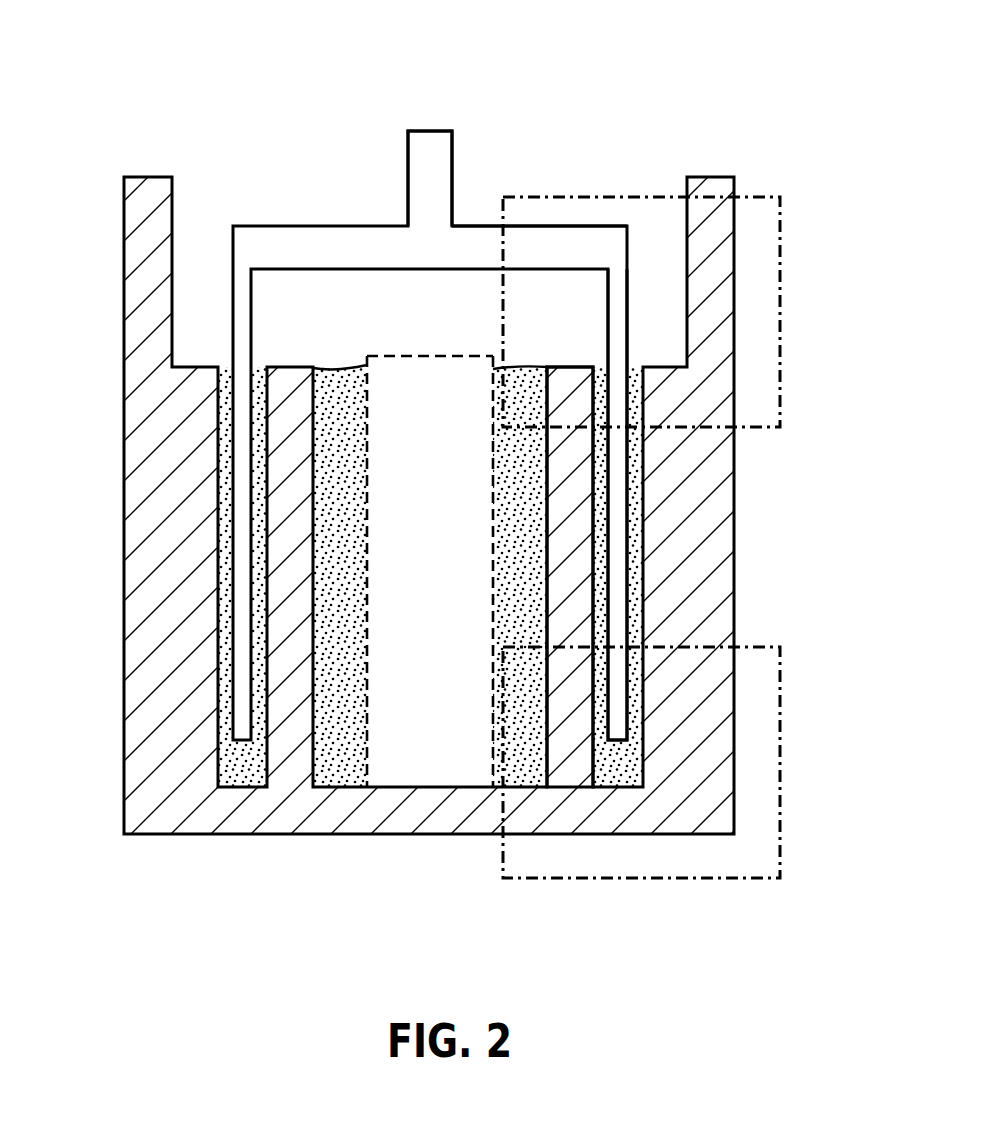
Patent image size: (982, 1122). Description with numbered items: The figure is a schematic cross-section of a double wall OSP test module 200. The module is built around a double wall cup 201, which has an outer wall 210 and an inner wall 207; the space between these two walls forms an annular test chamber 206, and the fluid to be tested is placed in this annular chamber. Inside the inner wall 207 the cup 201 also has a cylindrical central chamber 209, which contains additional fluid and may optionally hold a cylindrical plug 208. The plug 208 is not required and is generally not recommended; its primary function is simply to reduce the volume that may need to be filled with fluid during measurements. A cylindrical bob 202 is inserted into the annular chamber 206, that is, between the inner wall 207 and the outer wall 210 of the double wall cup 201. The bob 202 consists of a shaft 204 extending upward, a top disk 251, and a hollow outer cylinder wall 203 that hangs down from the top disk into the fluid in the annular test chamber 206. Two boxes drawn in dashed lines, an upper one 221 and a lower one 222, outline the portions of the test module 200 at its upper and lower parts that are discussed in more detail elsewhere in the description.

The test module 200 is at (522, 90).
The double wall cup 201 is at (710, 467).
The cylindrical bob 202 is at (280, 243).
The hollow outer cylinder wall 203 is at (617, 482).
The shaft 204 is at (423, 182).
The annular test chamber 206 is at (633, 588).
The inner wall 207 is at (578, 543).
The cylindrical plug 208 is at (420, 768).
The cylindrical central chamber 209 is at (337, 482).
The outer wall 210 is at (682, 707).
The dashed lines (upper portion outline) 221 is at (630, 193).
The dashed lines (lower portion outline) 222 is at (710, 883).
The top disk 251 is at (470, 225).